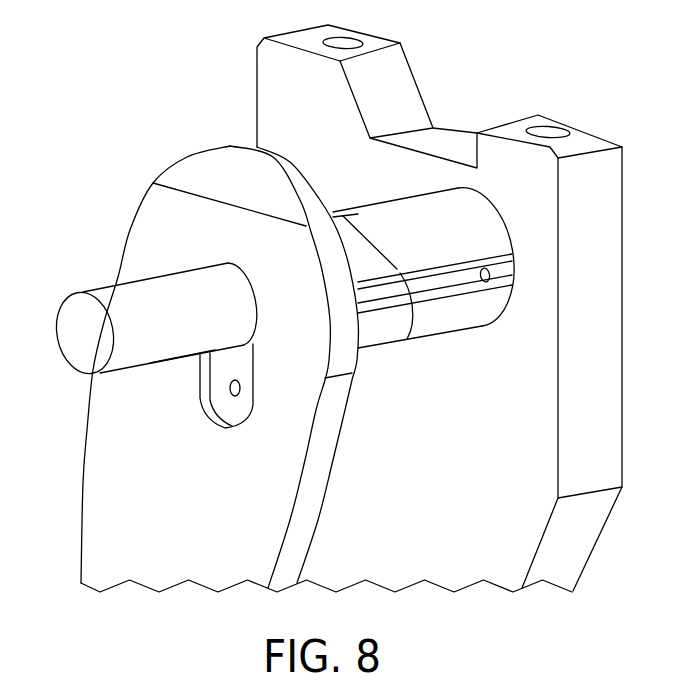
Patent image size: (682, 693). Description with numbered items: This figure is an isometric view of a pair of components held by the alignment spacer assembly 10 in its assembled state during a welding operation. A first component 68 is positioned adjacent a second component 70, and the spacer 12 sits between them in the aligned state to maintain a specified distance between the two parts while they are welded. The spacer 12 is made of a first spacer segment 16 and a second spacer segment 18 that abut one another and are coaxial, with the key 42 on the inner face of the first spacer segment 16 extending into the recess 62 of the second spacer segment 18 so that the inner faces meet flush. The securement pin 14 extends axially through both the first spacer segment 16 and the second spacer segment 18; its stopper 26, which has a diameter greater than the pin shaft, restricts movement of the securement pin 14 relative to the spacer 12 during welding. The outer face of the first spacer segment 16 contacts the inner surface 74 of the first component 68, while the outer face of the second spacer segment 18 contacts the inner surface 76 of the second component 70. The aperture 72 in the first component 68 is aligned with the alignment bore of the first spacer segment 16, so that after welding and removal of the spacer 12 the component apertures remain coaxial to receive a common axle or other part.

The alignment spacer assembly 10 is at (185, 110).
The spacer 12 is at (250, 138).
The securement pin 14 is at (87, 278).
The first spacer segment 16 is at (390, 275).
The second spacer segment 18 is at (468, 340).
The stopper 26 is at (152, 357).
The key 42 is at (340, 211).
The recess 62 is at (350, 212).
The first component 68 is at (175, 175).
The second component 70 is at (405, 65).
The aperture 72 is at (253, 352).
The inner surface 74 is at (354, 364).
The inner surface 76 is at (431, 162).